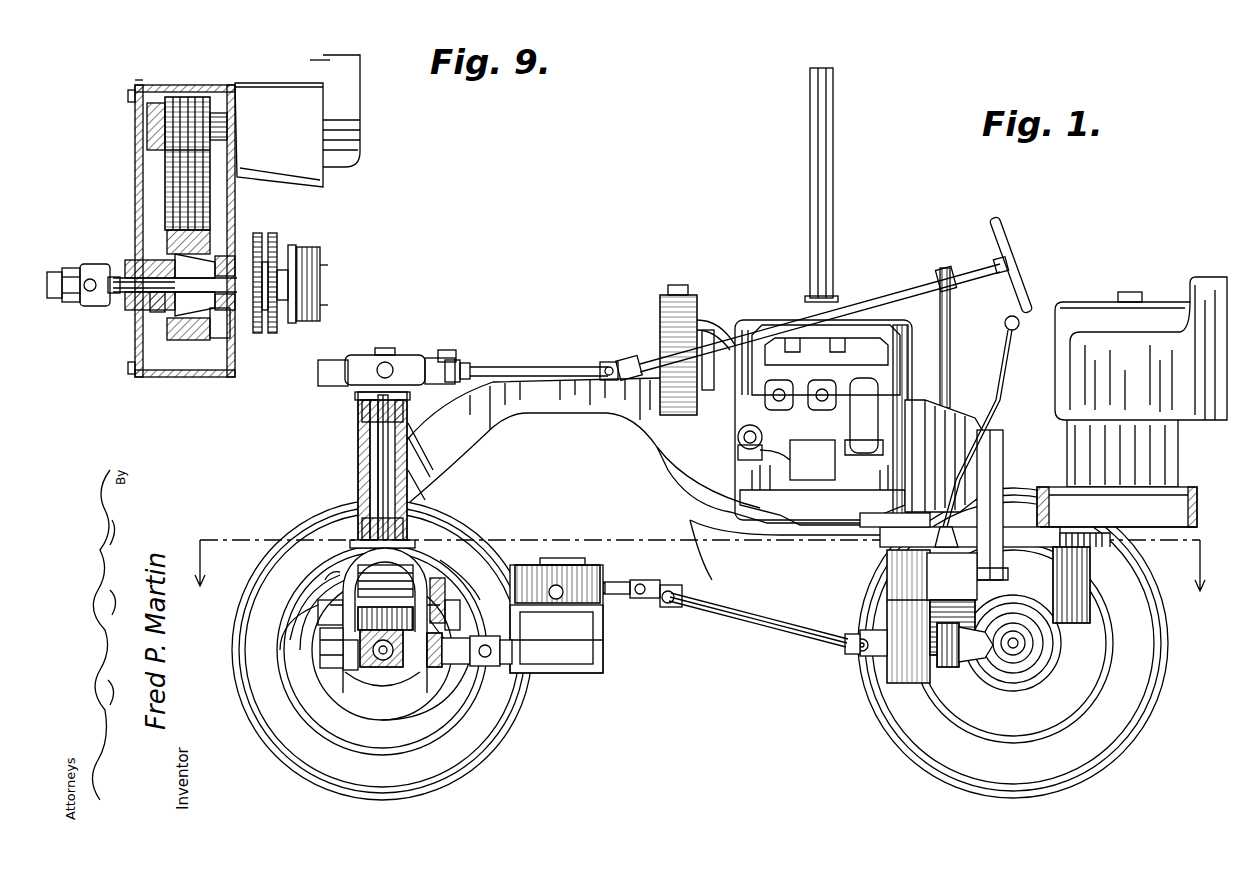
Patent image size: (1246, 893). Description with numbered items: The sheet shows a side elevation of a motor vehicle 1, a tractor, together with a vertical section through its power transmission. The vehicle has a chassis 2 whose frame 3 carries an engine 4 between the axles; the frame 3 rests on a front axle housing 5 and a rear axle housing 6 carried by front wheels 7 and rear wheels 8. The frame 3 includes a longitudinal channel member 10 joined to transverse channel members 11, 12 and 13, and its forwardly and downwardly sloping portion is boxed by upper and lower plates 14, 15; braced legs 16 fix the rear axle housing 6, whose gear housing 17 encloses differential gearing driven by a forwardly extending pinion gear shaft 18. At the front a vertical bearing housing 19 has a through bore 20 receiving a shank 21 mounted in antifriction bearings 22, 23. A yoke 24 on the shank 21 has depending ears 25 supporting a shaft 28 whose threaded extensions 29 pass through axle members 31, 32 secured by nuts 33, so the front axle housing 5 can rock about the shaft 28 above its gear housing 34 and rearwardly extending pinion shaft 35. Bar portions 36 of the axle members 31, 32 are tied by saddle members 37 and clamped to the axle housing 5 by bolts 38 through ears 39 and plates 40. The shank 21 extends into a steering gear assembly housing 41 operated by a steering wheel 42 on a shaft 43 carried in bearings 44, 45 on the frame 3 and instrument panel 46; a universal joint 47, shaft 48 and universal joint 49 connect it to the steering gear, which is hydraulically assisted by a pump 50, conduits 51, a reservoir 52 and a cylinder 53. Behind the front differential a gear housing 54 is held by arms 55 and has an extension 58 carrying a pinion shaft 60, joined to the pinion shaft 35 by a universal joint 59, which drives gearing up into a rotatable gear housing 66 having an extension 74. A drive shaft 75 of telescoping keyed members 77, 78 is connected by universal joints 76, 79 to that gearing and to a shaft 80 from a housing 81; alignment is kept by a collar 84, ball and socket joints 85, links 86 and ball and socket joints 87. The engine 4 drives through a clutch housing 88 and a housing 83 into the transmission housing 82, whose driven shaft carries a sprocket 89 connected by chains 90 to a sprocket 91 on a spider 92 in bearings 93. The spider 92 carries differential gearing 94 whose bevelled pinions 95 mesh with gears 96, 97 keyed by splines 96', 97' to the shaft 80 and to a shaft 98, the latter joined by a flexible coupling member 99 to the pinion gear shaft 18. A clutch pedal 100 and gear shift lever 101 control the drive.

In FIG. 1, the motor vehicle 1 is at (655, 350).
In FIG. 1, the chassis 2 is at (1110, 540).
In FIG. 1, the frame 3 is at (1195, 448).
In FIG. 1, the engine 4 is at (748, 320).
In FIG. 1, the front axle housing 5 is at (372, 675).
In FIG. 1, the rear axle housing 6 is at (1040, 672).
In FIG. 1, the front wheels 7 is at (490, 740).
In FIG. 1, the rear wheels 8 is at (1120, 760).
In FIG. 1, the longitudinal channel member 10 is at (1150, 520).
In FIG. 1, the transverse channel member 11 is at (668, 455).
In FIG. 1, the transverse channel member 12 is at (1020, 500).
In FIG. 1, the transverse channel member 13 is at (1190, 492).
In FIG. 1, the upper plate 14 is at (420, 440).
In FIG. 1, the lower plate 15 is at (465, 448).
In FIG. 1, the legs 16 is at (1092, 588).
In FIG. 9, the gear housing 17 is at (312, 270).
In FIG. 1, the gear housing 17 is at (1012, 670).
In FIG. 9, the pinion gear shaft 18 is at (292, 262).
In FIG. 1, the pinion gear shaft 18 is at (948, 668).
In FIG. 1, the bearing housing 19 is at (360, 460).
In FIG. 1, the vertical through bore 20 is at (372, 440).
In FIG. 1, the shank 21 is at (380, 478).
In FIG. 1, the antifriction bearing 22 is at (362, 412).
In FIG. 1, the antifriction bearing 23 is at (362, 530).
In FIG. 1, the yoke 24 is at (350, 562).
In FIG. 1, the depending ears 25 is at (348, 590).
In FIG. 1, the shaft 28 is at (395, 565).
In FIG. 1, the threaded extensions 29 is at (450, 600).
In FIG. 1, the axle member 31 is at (338, 600).
In FIG. 1, the axle member 32 is at (445, 590).
In FIG. 1, the nuts 33 is at (455, 575).
In FIG. 1, the gear housing 34 is at (362, 672).
In FIG. 1, the pinion shaft 35 is at (450, 667).
In FIG. 1, the bar portions 36 is at (340, 640).
In FIG. 1, the saddle members 37 is at (350, 632).
In FIG. 1, the bolts 38 is at (348, 668).
In FIG. 1, the ears 39 is at (360, 655).
In FIG. 1, the plates 40 is at (385, 672).
In FIG. 1, the steering gear assembly housing 41 is at (400, 352).
In FIG. 1, the steering wheel 42 is at (1015, 240).
In FIG. 1, the shaft 43 is at (885, 300).
In FIG. 1, the bearing 44 is at (630, 360).
In FIG. 1, the bearing 45 is at (945, 268).
In FIG. 1, the instrument panel 46 is at (950, 325).
In FIG. 1, the universal joint 47 is at (605, 362).
In FIG. 1, the shaft 48 is at (525, 367).
In FIG. 1, the universal joint 49 is at (462, 365).
In FIG. 1, the pump 50 is at (748, 425).
In FIG. 1, the conduits 51 is at (780, 435).
In FIG. 1, the reservoir 52 is at (822, 505).
In FIG. 1, the cylinder 53 is at (450, 352).
In FIG. 1, the gear housing 54 is at (605, 665).
In FIG. 1, the arms 55 is at (320, 612).
In FIG. 1, the extension 58 is at (486, 666).
In FIG. 1, the universal joint 59 is at (462, 650).
In FIG. 1, the pinion shaft 60 is at (503, 666).
In FIG. 1, the gear housing 66 is at (520, 565).
In FIG. 1, the extension 74 is at (603, 583).
In FIG. 9, the drive shaft 75 is at (60, 290).
In FIG. 1, the drive shaft 75 is at (845, 648).
In FIG. 1, the universal joint 76 is at (652, 572).
In FIG. 1, the telescoping keyed member 77 is at (755, 620).
In FIG. 1, the telescoping keyed member 78 is at (840, 640).
In FIG. 9, the universal joint 79 is at (88, 267).
In FIG. 1, the universal joint 79 is at (860, 655).
In FIG. 9, the shaft 80 is at (128, 295).
In FIG. 1, the shaft 80 is at (875, 658).
In FIG. 9, the housing 81 is at (168, 376).
In FIG. 1, the housing 81 is at (912, 683).
In FIG. 9, the transmission housing 82 is at (285, 100).
In FIG. 1, the transmission housing 82 is at (935, 605).
In FIG. 9, the housing 83 is at (350, 70).
In FIG. 1, the housing 83 is at (995, 495).
In FIG. 1, the collar 84 is at (668, 608).
In FIG. 1, the ball and socket joints 85 is at (672, 587).
In FIG. 1, the links 86 is at (620, 596).
In FIG. 1, the ball and socket joints 87 is at (560, 585).
In FIG. 1, the clutch housing 88 is at (950, 420).
In FIG. 9, the sprocket 89 is at (183, 105).
In FIG. 9, the chains 90 is at (172, 168).
In FIG. 9, the sprocket 91 is at (222, 335).
In FIG. 9, the spider 92 is at (225, 255).
In FIG. 9, the bearings 93 is at (240, 300).
In FIG. 9, the differential gearing 94 is at (168, 255).
In FIG. 9, the bevelled pinions 95 is at (140, 262).
In FIG. 9, the gear 96 is at (162, 324).
In FIG. 9, the splines 96' is at (161, 237).
In FIG. 9, the gear 97 is at (188, 345).
In FIG. 9, the splines 97' is at (128, 340).
In FIG. 9, the shaft 98 is at (262, 252).
In FIG. 9, the flexible coupling member 99 is at (262, 270).
In FIG. 1, the flexible coupling member 99 is at (968, 664).
In FIG. 1, the clutch pedal 100 is at (970, 450).
In FIG. 1, the gear shift lever 101 is at (1003, 390).